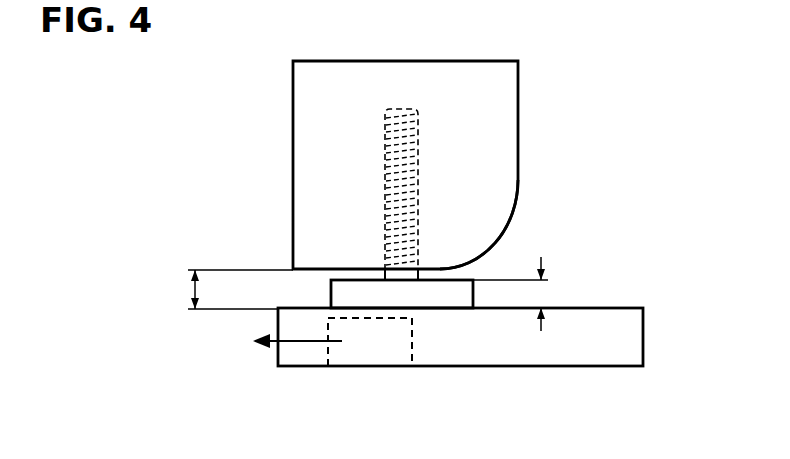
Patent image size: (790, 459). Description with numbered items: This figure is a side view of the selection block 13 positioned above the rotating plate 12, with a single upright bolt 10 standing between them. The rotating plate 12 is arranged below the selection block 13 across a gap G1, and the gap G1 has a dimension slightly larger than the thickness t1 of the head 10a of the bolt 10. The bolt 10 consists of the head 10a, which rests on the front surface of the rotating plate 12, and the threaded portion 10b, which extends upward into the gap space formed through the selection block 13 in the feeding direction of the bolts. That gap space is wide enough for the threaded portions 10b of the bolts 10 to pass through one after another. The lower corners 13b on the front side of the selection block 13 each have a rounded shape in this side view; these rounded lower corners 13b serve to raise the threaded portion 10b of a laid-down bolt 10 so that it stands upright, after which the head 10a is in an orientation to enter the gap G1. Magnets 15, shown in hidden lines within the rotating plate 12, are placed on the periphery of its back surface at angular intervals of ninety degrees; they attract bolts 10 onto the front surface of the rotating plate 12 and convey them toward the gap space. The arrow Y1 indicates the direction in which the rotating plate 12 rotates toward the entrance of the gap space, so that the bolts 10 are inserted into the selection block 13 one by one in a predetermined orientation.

The selection block 13 is at (408, 61).
The lower corner 13b is at (504, 237).
The bolt 10 is at (490, 208).
The head 10a is at (442, 280).
The threaded portion 10b is at (418, 148).
The rotating plate 12 is at (643, 340).
The magnet 15 is at (412, 338).
The arrow Y1 is at (300, 343).
The gap G1 is at (220, 289).
The thickness t1 is at (526, 294).